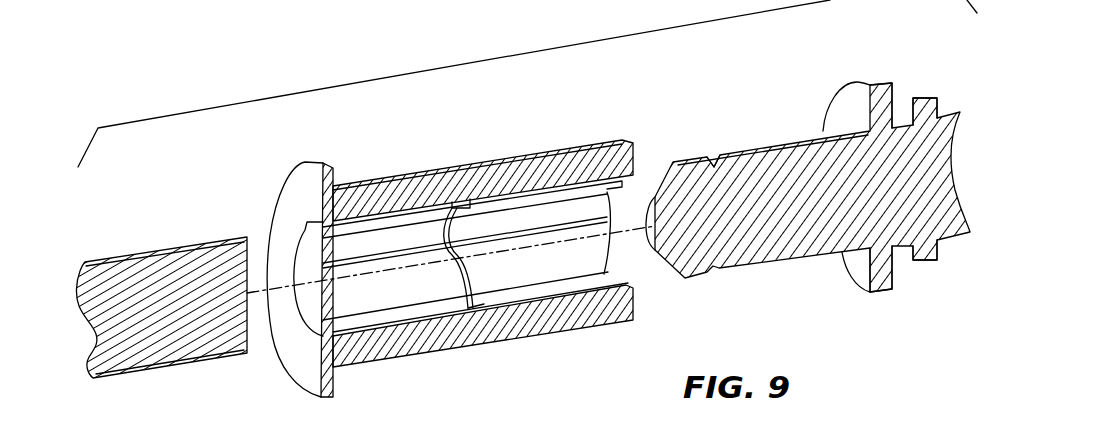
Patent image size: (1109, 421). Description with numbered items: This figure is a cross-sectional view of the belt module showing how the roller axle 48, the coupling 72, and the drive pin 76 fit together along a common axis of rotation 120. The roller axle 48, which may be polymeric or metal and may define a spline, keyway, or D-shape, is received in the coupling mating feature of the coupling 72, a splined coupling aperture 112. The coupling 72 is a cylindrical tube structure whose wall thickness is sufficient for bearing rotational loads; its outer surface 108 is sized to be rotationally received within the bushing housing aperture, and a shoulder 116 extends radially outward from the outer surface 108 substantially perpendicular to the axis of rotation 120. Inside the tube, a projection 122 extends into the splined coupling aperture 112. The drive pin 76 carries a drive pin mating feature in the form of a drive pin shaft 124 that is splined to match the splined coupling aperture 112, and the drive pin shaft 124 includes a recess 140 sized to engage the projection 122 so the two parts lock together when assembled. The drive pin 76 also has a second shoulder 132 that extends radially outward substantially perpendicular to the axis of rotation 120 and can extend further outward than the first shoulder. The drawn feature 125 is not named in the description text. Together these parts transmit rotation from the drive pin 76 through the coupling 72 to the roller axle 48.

The roller axle 48 is at (157, 280).
The coupling 72 is at (468, 251).
The drive pin 76 is at (808, 180).
The outer surface 108 is at (440, 167).
The splined coupling aperture 112 is at (597, 258).
The shoulder 116 is at (298, 183).
The axis of rotation 120 is at (265, 293).
The projection 122 is at (455, 274).
The drive pin shaft 124 is at (765, 232).
The shaft ridge 125 is at (917, 98).
The second shoulder 132 is at (877, 82).
The recess 140 is at (718, 158).